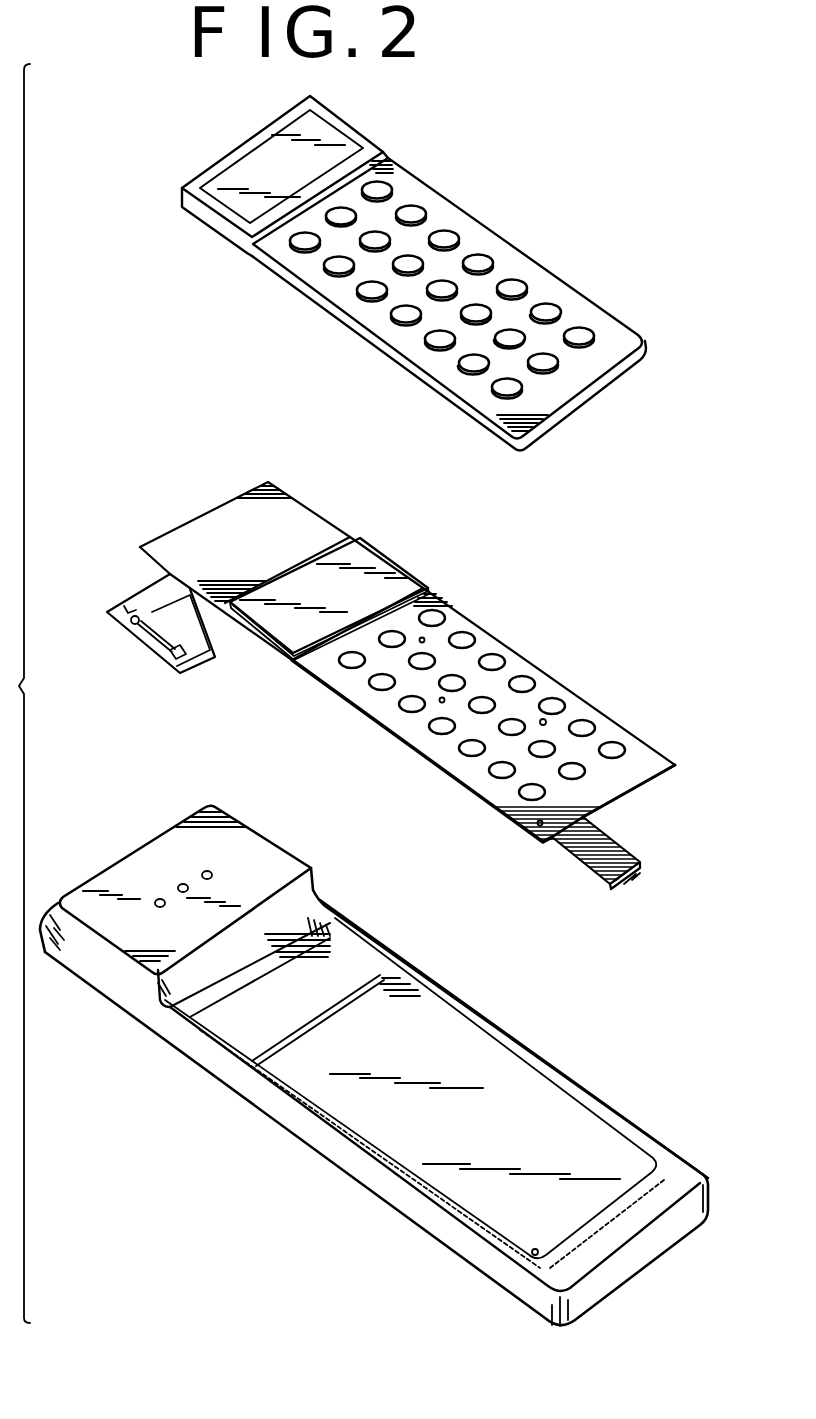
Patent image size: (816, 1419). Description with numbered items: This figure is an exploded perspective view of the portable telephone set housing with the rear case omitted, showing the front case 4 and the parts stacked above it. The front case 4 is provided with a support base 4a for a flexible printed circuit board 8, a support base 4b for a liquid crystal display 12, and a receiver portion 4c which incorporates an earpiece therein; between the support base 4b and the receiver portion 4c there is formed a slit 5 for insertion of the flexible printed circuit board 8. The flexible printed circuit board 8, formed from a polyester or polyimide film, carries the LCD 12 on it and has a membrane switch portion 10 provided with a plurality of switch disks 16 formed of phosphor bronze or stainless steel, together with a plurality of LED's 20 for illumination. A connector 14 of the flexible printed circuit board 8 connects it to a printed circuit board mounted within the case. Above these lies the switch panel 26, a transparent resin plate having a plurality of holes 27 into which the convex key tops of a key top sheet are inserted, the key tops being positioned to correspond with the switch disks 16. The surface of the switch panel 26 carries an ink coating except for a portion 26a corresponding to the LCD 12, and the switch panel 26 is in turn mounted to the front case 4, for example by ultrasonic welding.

The front case 4 is at (374, 1049).
The support base for flexible printed circuit board 4a is at (460, 1060).
The support base for liquid crystal display 4b is at (317, 978).
The receiver portion 4c is at (143, 858).
The slit 5 is at (263, 957).
The flexible printed circuit board 8 is at (408, 684).
The membrane switch portion 10 is at (501, 725).
The liquid crystal display 12 is at (367, 566).
The connector 14 is at (627, 855).
The switch disks 16 is at (583, 722).
The LED's 20 is at (425, 638).
The switch panel 26 is at (364, 273).
The portion corresponding to the LCD 26a is at (243, 170).
The holes 27 is at (467, 253).